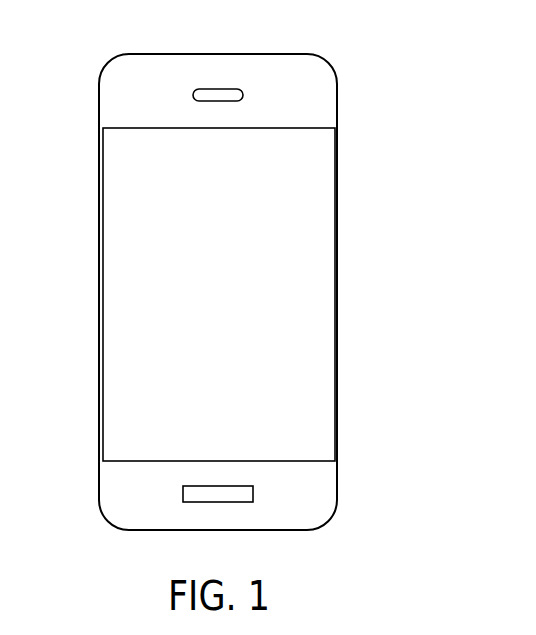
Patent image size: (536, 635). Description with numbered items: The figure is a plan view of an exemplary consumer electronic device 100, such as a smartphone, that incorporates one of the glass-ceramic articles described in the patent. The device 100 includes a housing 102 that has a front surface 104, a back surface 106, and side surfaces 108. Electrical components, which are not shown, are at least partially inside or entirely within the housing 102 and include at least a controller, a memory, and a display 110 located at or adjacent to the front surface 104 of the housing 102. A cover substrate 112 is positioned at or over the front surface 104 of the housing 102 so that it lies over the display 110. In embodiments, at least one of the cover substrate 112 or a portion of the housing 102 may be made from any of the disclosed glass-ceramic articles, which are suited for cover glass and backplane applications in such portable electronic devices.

The consumer electronic device 100 is at (278, 268).
The housing 102 is at (108, 110).
The front surface 104 is at (117, 483).
The back surface 106 is at (117, 198).
The side surfaces 108 is at (338, 188).
The display 110 is at (352, 322).
The cover substrate 112 is at (117, 340).